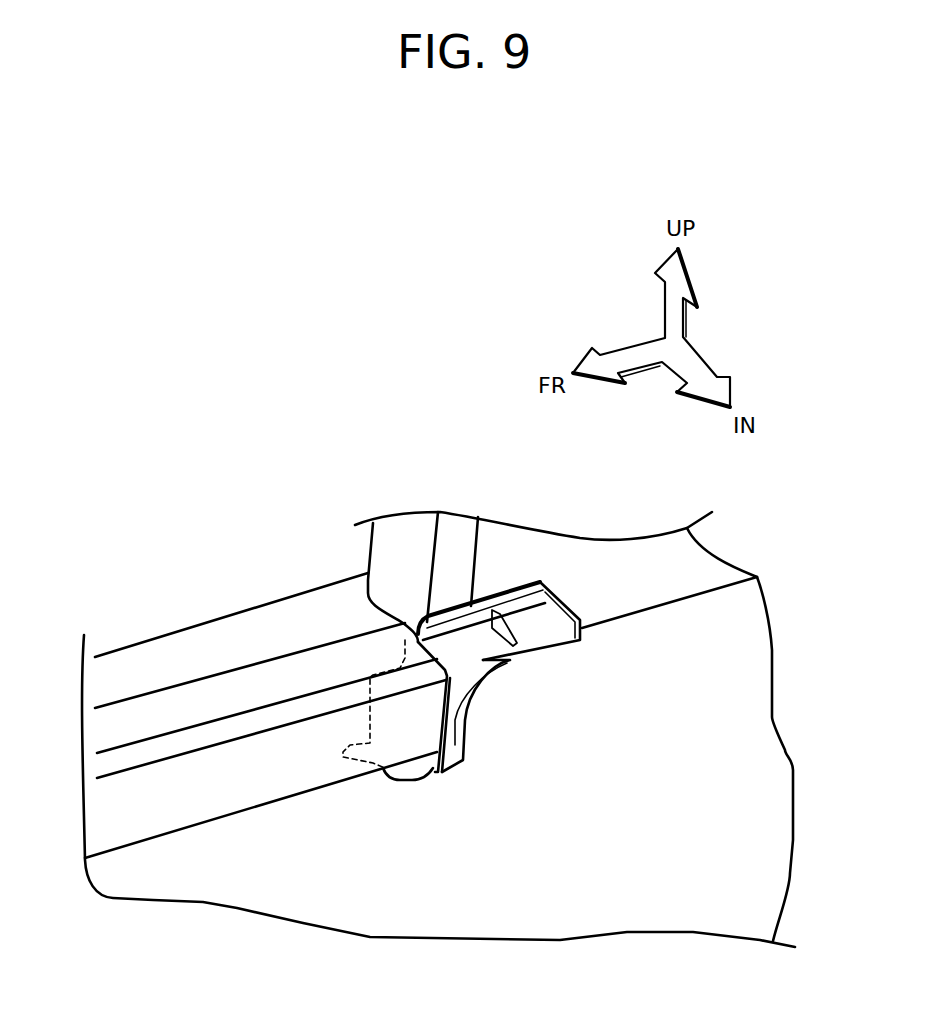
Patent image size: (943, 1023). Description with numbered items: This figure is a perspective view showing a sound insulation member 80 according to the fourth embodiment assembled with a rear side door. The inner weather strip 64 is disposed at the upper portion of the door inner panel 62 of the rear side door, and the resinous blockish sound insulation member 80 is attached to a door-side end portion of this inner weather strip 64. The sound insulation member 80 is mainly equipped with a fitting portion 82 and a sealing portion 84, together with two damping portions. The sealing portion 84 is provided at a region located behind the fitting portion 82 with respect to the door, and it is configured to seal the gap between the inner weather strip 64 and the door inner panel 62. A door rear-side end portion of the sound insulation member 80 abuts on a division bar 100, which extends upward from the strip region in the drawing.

The door inner panel 62 is at (287, 902).
The inner weather strip 64 is at (217, 823).
The sound insulation member 80 is at (520, 690).
The fitting portion 82 is at (412, 782).
The sealing portion 84 is at (490, 597).
The division bar 100 is at (390, 520).